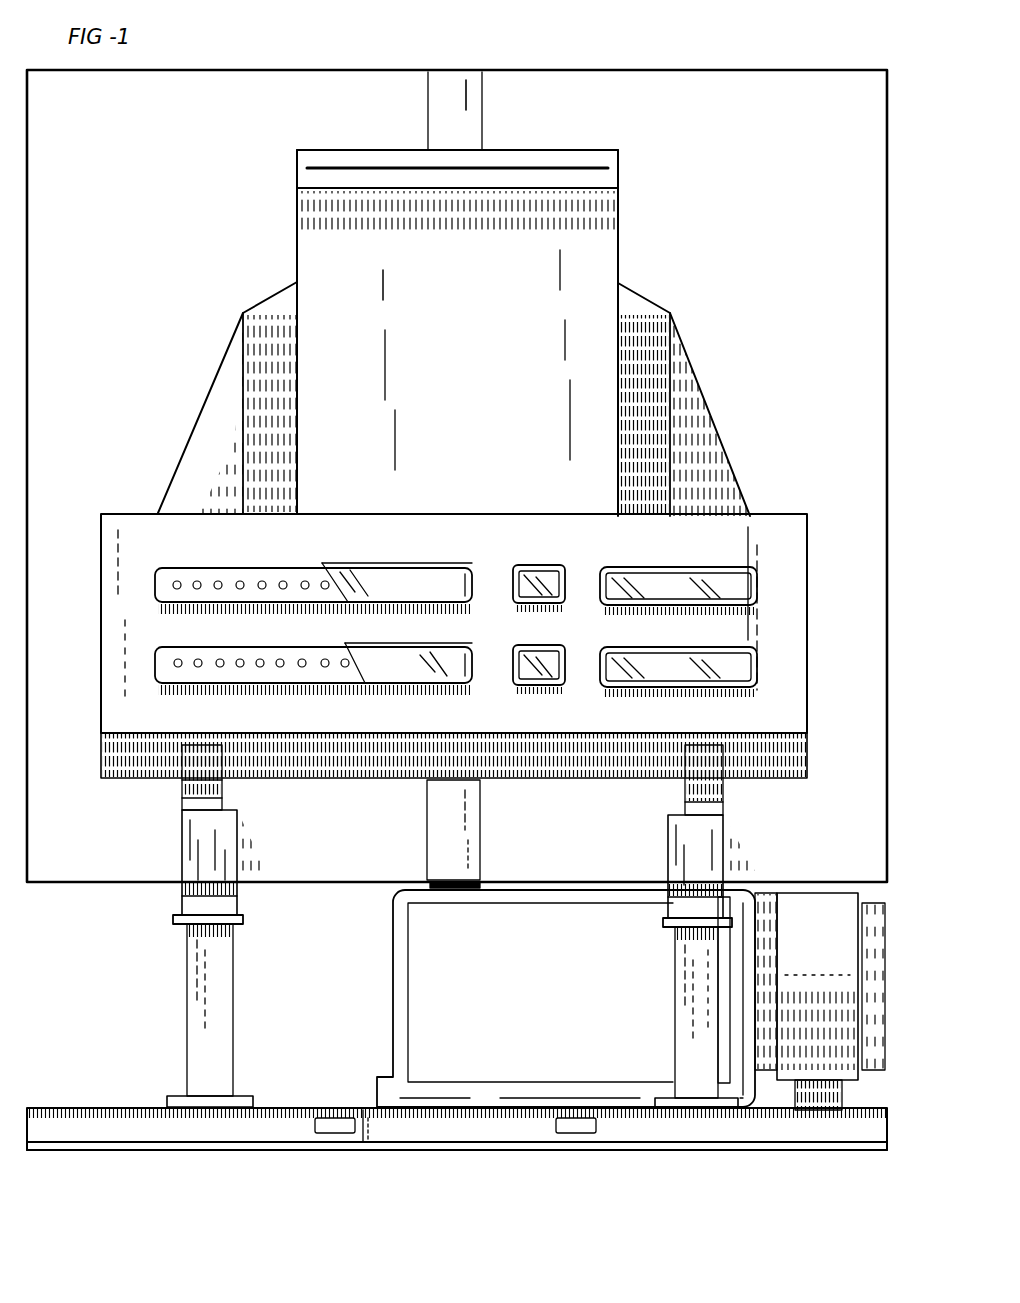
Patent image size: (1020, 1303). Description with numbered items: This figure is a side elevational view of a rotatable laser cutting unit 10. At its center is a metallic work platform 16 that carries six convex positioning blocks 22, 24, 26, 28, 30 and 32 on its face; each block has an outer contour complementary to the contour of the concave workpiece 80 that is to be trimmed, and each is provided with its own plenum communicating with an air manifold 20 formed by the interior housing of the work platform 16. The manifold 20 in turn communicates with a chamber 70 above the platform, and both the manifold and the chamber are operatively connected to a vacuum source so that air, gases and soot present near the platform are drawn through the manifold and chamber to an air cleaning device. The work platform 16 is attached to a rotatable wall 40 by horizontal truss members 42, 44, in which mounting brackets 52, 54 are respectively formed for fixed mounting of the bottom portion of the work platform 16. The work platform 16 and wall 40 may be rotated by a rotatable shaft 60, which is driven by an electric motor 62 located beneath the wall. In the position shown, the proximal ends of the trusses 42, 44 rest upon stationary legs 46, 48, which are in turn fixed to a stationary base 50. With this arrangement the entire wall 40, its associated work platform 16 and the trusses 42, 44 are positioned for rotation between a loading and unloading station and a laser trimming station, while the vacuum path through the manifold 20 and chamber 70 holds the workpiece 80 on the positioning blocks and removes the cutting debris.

The laser cutting unit 10 is at (691, 250).
The work platform 16 is at (792, 590).
The air manifold 20 is at (806, 665).
The convex positioning block 22 is at (210, 578).
The convex positioning block 24 is at (545, 580).
The convex positioning block 26 is at (648, 585).
The convex positioning block 28 is at (620, 672).
The convex positioning block 30 is at (517, 680).
The convex positioning block 32 is at (180, 672).
The rotatable wall 40 is at (252, 90).
The horizontal truss member 42 is at (195, 858).
The horizontal truss member 44 is at (680, 858).
The stationary leg 46 is at (180, 903).
The stationary leg 48 is at (680, 910).
The stationary base 50 is at (283, 1126).
The mounting bracket 52 is at (182, 787).
The mounting bracket 54 is at (725, 790).
The rotatable shaft 60 is at (432, 880).
The electric motor 62 is at (428, 1022).
The chamber 70 is at (312, 272).
The concave workpiece 80 is at (417, 575).